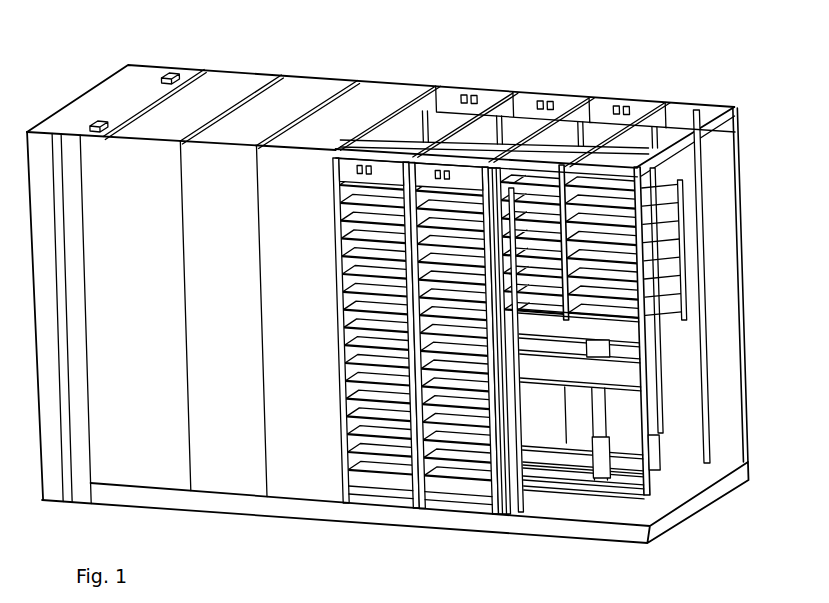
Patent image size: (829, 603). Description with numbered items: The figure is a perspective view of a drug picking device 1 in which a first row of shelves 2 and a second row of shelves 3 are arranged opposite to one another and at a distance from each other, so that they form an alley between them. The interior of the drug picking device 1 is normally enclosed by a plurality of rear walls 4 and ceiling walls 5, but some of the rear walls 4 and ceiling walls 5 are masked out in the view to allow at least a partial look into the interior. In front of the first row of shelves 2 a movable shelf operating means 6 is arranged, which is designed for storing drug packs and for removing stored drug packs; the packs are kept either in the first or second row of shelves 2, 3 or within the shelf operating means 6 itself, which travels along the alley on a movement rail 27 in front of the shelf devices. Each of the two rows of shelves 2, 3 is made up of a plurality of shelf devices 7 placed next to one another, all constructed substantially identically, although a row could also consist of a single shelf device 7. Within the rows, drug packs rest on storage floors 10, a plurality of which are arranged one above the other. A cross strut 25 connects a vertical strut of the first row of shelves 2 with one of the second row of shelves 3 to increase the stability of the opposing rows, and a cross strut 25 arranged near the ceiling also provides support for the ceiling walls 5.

The drug picking device 1 is at (483, 68).
The first row of shelves 2 is at (690, 233).
The second row of shelves 3 is at (331, 394).
The rear walls 4 is at (220, 463).
The ceiling walls 5 is at (287, 100).
The shelf operating means 6 is at (647, 465).
The shelf device 7 is at (390, 468).
The storage floor 10 is at (616, 195).
The cross strut 25 is at (500, 97).
The movement rail 27 is at (602, 100).